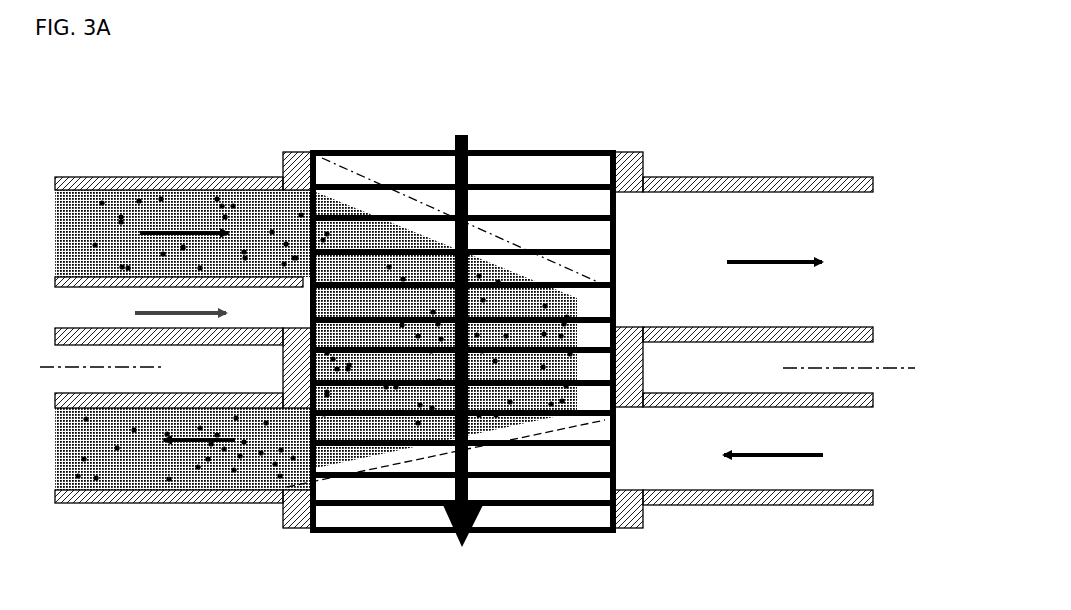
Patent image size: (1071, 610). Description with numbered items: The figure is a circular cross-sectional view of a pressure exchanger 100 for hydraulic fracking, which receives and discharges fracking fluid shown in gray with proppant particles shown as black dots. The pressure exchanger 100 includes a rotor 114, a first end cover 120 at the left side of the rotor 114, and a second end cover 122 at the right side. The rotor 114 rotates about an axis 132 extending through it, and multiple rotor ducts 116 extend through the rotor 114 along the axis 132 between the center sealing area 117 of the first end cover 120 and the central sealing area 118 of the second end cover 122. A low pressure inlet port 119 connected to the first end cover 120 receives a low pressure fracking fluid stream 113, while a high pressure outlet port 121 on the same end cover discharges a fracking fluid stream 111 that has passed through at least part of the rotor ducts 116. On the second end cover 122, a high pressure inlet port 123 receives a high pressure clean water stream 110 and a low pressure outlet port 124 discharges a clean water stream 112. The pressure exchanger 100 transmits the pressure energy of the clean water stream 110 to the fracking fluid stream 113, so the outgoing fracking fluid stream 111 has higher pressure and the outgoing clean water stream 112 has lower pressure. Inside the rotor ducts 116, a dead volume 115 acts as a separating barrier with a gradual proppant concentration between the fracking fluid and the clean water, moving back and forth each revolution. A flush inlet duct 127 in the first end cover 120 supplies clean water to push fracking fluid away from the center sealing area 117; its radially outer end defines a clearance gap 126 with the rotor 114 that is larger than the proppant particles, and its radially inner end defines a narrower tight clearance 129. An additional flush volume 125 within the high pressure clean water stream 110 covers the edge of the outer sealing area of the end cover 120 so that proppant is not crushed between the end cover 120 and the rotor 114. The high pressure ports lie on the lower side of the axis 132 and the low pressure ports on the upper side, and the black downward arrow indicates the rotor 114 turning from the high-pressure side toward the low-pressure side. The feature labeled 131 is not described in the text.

The pressure exchanger 100 is at (614, 81).
The high pressure clean water stream 110 is at (853, 443).
The fracking fluid stream 111 is at (85, 443).
The clean water stream 112 is at (850, 285).
The fracking fluid stream 113 is at (75, 243).
The rotor 114 is at (523, 150).
The dead volume 115 is at (398, 205).
The rotor ducts 116 is at (527, 510).
The center sealing area 117 is at (302, 366).
The central sealing area 118 is at (628, 366).
The low pressure inlet port 119 is at (165, 178).
The first end cover 120 is at (282, 168).
The high pressure outlet port 121 is at (190, 492).
The second end cover 122 is at (630, 160).
The high pressure inlet port 123 is at (745, 505).
The low pressure outlet port 124 is at (743, 180).
The flush volume 125 is at (298, 472).
The clearance gap 126 is at (318, 278).
The flush inlet duct 127 is at (110, 305).
The tight clearance 129 is at (308, 300).
The left plate edge 131 is at (325, 360).
The axis 132 is at (910, 372).